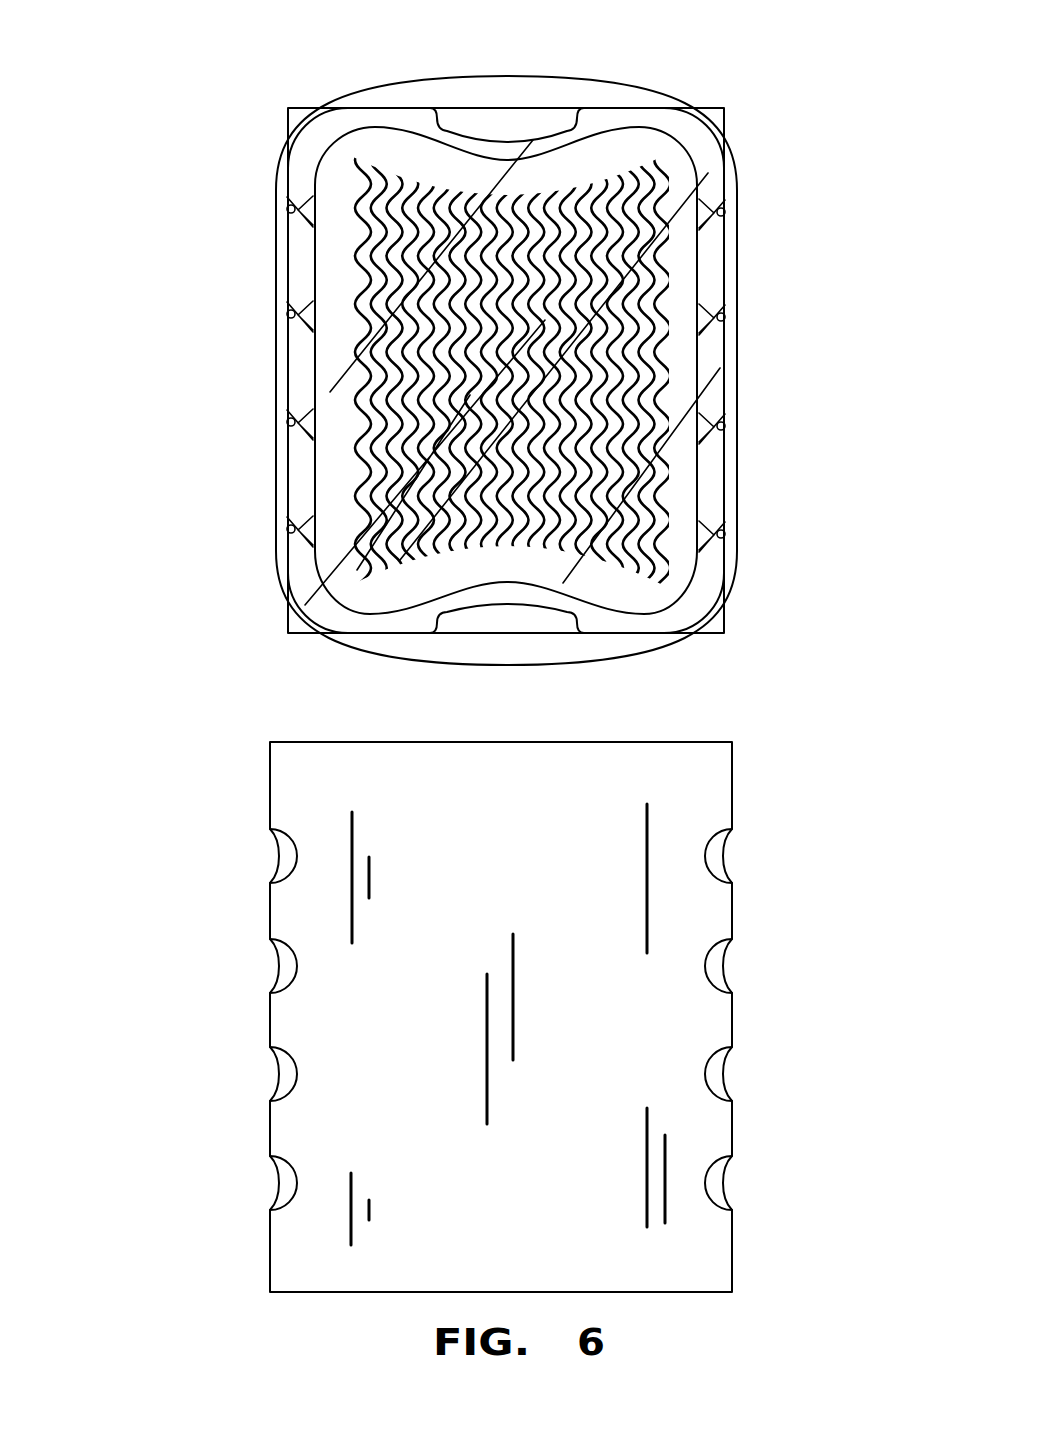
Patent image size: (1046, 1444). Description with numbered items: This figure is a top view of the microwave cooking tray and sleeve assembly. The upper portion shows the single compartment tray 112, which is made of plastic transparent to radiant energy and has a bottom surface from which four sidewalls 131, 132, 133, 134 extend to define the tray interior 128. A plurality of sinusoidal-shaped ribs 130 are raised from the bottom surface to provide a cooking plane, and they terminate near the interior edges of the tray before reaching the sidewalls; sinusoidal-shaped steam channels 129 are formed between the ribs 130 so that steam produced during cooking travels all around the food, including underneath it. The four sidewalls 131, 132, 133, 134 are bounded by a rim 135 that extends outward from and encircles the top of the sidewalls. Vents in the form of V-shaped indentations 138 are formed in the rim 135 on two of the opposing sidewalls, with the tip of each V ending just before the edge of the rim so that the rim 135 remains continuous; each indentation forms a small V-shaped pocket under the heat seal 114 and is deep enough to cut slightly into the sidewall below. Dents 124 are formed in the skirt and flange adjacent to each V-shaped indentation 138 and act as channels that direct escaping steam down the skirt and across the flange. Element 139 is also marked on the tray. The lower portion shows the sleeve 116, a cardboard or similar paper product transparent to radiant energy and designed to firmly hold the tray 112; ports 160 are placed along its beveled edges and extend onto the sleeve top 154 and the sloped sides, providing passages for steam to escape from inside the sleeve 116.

The tray 112 is at (602, 97).
The heat seal 114 is at (721, 110).
The sleeve 116 is at (702, 782).
The dents 124 is at (290, 533).
The tray interior 128 is at (307, 475).
The steam channels 129 is at (387, 171).
The ribs 130 is at (390, 173).
The sidewall 131 is at (677, 403).
The sidewall 132 is at (697, 270).
The sidewall 133 is at (473, 158).
The sidewall 134 is at (330, 392).
The rim 135 is at (302, 570).
The V-shaped indentations 138 is at (290, 197).
The recess 139 is at (723, 212).
The sleeve top 154 is at (307, 1033).
The ports 160 is at (270, 853).